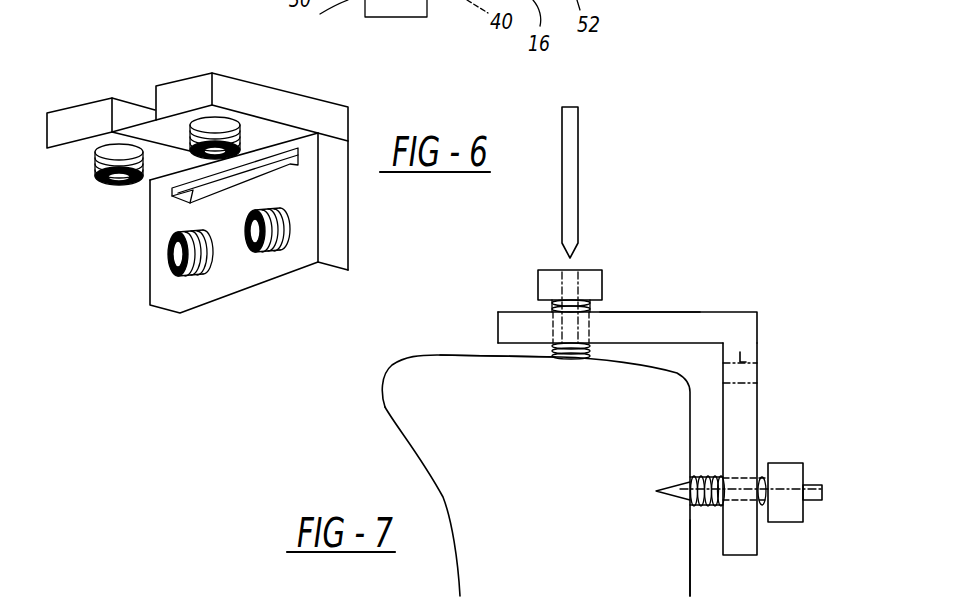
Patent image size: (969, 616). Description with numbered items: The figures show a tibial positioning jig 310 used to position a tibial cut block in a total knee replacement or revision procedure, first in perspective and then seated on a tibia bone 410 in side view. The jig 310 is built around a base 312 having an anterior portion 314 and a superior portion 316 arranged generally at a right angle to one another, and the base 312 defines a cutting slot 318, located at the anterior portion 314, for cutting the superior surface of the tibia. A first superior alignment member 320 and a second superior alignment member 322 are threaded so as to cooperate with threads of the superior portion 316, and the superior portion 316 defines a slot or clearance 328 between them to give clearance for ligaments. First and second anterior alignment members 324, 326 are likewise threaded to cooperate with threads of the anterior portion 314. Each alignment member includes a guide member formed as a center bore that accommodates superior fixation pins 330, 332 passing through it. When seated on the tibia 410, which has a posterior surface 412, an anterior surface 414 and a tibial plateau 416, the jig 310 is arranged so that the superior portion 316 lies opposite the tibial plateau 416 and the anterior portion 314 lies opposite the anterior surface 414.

In FIG. 6, the tibial positioning jig 310 is at (106, 226).
In FIG. 7, the tibial positioning jig 310 is at (730, 246).
In FIG. 6, the base 312 is at (258, 93).
In FIG. 7, the base 312 is at (717, 323).
In FIG. 6, the anterior portion 314 is at (333, 208).
In FIG. 7, the anterior portion 314 is at (738, 418).
In FIG. 6, the superior portion 316 is at (228, 86).
In FIG. 7, the superior portion 316 is at (637, 325).
In FIG. 6, the cutting slot 318 is at (288, 160).
In FIG. 7, the cutting slot 318 is at (740, 352).
In FIG. 6, the first superior alignment member 320 is at (218, 134).
In FIG. 7, the first superior alignment member 320 is at (543, 289).
In FIG. 6, the second superior alignment member 322 is at (97, 160).
In FIG. 6, the first anterior alignment member 324 is at (259, 262).
In FIG. 7, the first anterior alignment member 324 is at (790, 517).
In FIG. 6, the second anterior alignment member 326 is at (165, 257).
In FIG. 6, the slot or clearance 328 is at (134, 101).
In FIG. 7, the superior fixation pin 330 is at (578, 192).
In FIG. 7, the superior fixation pin 332 is at (812, 486).
In FIG. 7, the tibia bone 410 is at (387, 410).
In FIG. 7, the posterior surface 412 is at (415, 453).
In FIG. 7, the anterior surface 414 is at (690, 548).
In FIG. 7, the tibial plateau 416 is at (448, 355).